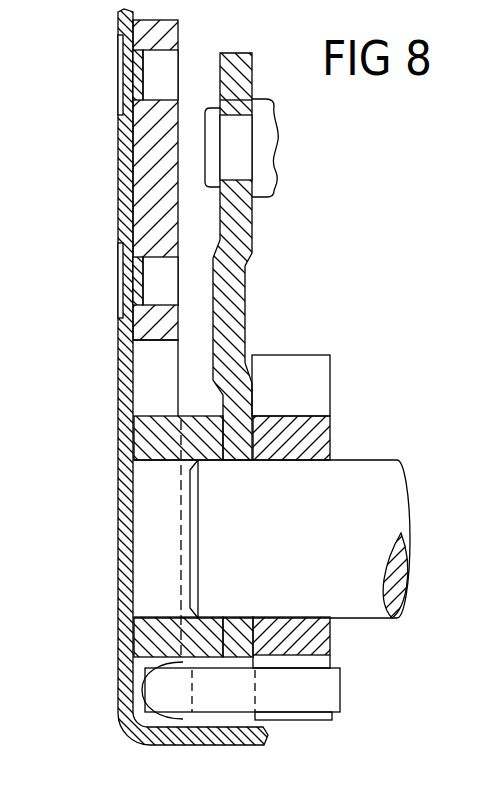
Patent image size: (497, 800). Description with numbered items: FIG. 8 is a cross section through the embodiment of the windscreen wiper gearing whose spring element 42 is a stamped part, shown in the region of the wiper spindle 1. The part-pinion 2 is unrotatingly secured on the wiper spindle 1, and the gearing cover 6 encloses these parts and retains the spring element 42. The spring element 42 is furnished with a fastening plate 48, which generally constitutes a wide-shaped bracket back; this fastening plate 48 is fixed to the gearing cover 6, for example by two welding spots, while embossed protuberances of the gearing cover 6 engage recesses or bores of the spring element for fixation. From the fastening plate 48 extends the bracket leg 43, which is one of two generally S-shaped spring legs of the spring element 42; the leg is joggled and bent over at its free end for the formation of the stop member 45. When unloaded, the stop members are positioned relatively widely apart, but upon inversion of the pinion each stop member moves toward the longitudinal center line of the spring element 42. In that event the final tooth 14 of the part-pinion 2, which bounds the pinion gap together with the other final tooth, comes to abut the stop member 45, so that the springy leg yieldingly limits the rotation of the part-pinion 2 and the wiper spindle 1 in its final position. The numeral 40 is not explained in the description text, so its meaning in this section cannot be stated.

The wiper spindle 1 is at (385, 494).
The part-pinion 2 is at (318, 442).
The gearing cover 6 is at (127, 540).
The final tooth 14 is at (297, 720).
The mounting assembly 40 is at (476, 644).
The spring element 42 is at (212, 228).
The bracket leg 43 is at (147, 389).
The stop member 45 is at (325, 680).
The fastening plate 48 is at (140, 140).